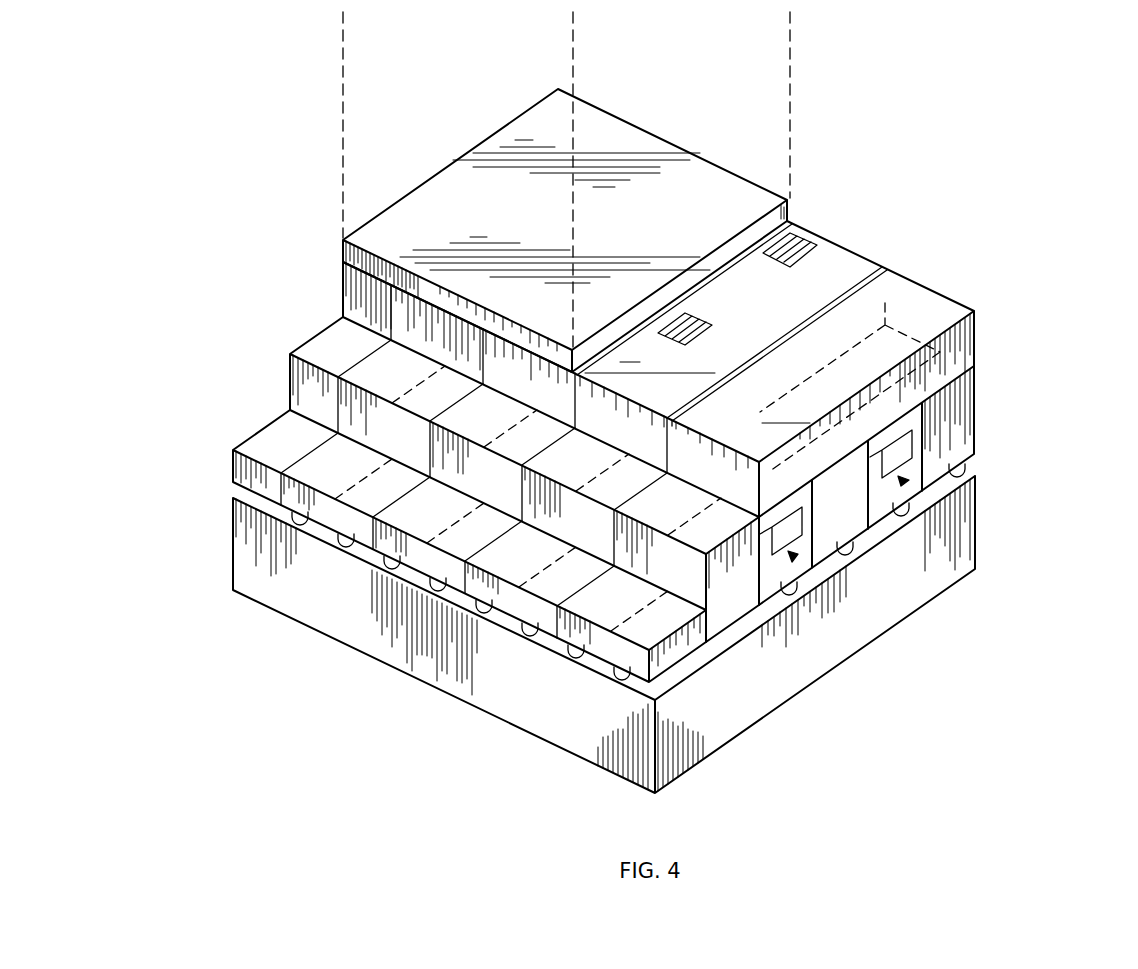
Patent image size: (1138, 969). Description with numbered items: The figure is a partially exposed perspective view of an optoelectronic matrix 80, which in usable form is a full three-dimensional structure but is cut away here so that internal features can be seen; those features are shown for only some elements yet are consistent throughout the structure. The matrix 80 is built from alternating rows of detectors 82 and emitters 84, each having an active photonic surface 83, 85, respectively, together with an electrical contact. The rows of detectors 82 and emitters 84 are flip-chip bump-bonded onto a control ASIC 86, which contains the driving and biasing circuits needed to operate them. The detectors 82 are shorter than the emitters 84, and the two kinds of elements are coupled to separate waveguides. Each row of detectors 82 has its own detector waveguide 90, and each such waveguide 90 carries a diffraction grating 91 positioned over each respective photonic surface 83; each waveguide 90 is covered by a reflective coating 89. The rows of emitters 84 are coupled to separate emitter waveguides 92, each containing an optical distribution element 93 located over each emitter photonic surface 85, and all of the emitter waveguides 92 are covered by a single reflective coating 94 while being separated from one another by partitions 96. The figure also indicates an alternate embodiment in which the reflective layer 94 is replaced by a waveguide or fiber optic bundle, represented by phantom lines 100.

The optoelectronic matrix 80 is at (186, 155).
The detectors 82 is at (242, 412).
The active photonic surface 83 is at (457, 541).
The emitters 84 is at (296, 326).
The active photonic surface 85 is at (464, 424).
The control ASIC 86 is at (275, 590).
The reflective coating 89 is at (917, 417).
The detector waveguide 90 is at (900, 478).
The diffraction grating 91 is at (903, 448).
The emitter waveguide 92 is at (520, 378).
The optical distribution element 93 is at (800, 248).
The reflective coating 94 is at (648, 155).
The partitions 96 is at (792, 224).
The phantom lines 100 is at (343, 68).